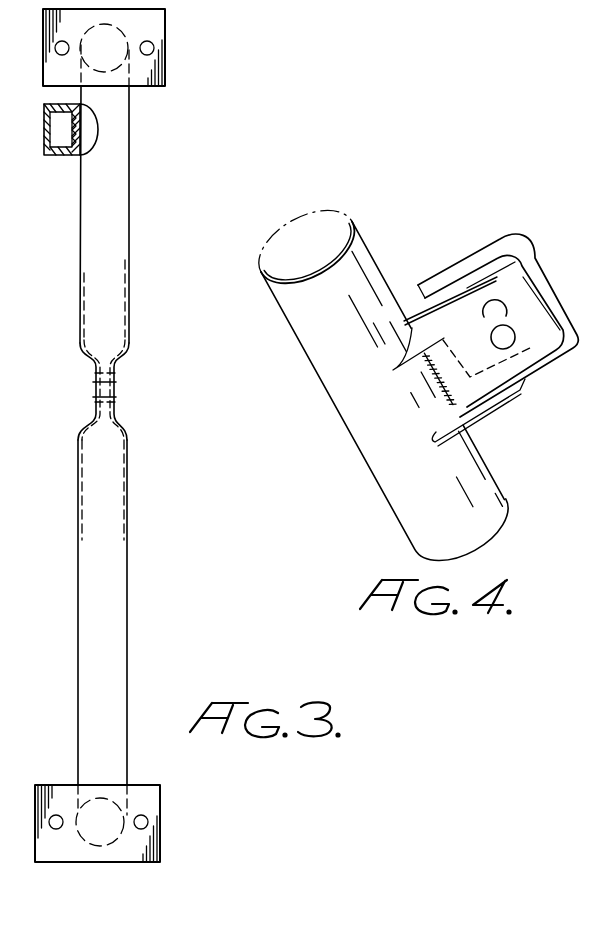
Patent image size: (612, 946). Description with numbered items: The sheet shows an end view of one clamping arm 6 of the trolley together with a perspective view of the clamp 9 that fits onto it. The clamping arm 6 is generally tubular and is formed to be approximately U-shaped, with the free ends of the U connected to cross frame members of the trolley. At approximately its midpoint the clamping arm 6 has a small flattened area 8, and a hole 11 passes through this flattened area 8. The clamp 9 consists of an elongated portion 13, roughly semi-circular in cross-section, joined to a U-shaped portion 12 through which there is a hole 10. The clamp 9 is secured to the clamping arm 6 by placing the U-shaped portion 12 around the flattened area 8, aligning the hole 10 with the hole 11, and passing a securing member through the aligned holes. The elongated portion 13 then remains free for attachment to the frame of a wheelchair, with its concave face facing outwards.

In FIG. 3, the clamping arm 6 is at (128, 195).
In FIG. 3, the flattened area 8 is at (114, 408).
In FIG. 3, the hole 11 is at (113, 392).
In FIG. 4, the elongated portion 13 is at (316, 333).
In FIG. 4, the clamp 9 is at (514, 487).
In FIG. 4, the U-shaped portion 12 is at (543, 275).
In FIG. 4, the hole 10 is at (507, 335).